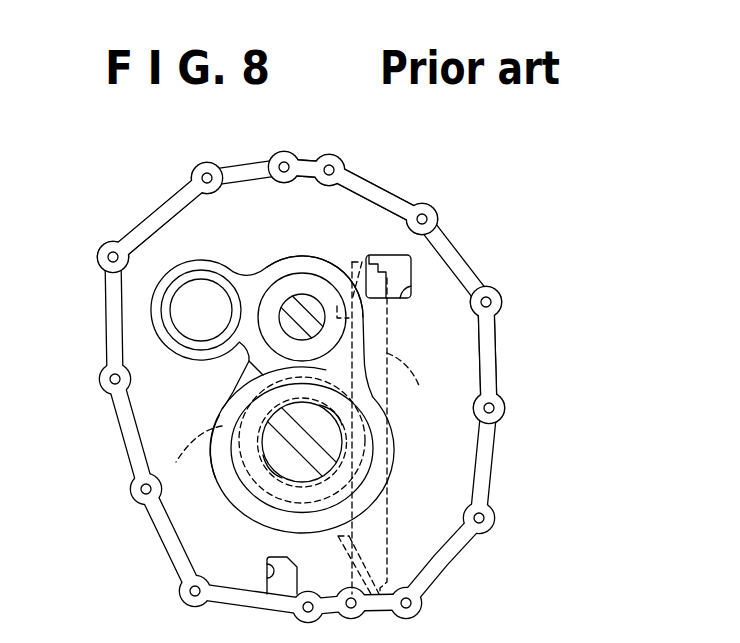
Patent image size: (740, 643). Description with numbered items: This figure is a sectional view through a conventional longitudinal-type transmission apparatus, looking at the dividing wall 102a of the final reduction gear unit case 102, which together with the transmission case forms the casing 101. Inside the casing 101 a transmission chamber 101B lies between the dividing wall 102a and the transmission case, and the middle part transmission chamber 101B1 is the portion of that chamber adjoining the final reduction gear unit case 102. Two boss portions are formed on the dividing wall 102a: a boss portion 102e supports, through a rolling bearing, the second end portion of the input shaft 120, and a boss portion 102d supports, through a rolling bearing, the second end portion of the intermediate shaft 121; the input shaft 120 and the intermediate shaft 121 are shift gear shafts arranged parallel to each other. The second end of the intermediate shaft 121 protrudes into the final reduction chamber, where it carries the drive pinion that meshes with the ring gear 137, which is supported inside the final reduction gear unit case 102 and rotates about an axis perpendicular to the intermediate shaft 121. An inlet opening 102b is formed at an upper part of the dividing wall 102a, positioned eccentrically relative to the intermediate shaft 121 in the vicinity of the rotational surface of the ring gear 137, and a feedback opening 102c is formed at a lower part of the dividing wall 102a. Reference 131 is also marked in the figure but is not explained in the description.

The casing 101 is at (392, 184).
The transmission chamber 101B is at (333, 190).
The middle part transmission chamber 101B1 is at (176, 221).
The final reduction gear unit case 102 is at (489, 456).
The dividing wall 102a is at (464, 363).
The inlet opening 102b is at (405, 298).
The feedback opening 102c is at (267, 562).
The boss portion 102d is at (218, 410).
The boss portion 102e is at (296, 259).
The input shaft 120 is at (291, 304).
The intermediate shaft 121 is at (268, 460).
The bearing outline 131 is at (192, 454).
The ring gear 137 is at (417, 382).